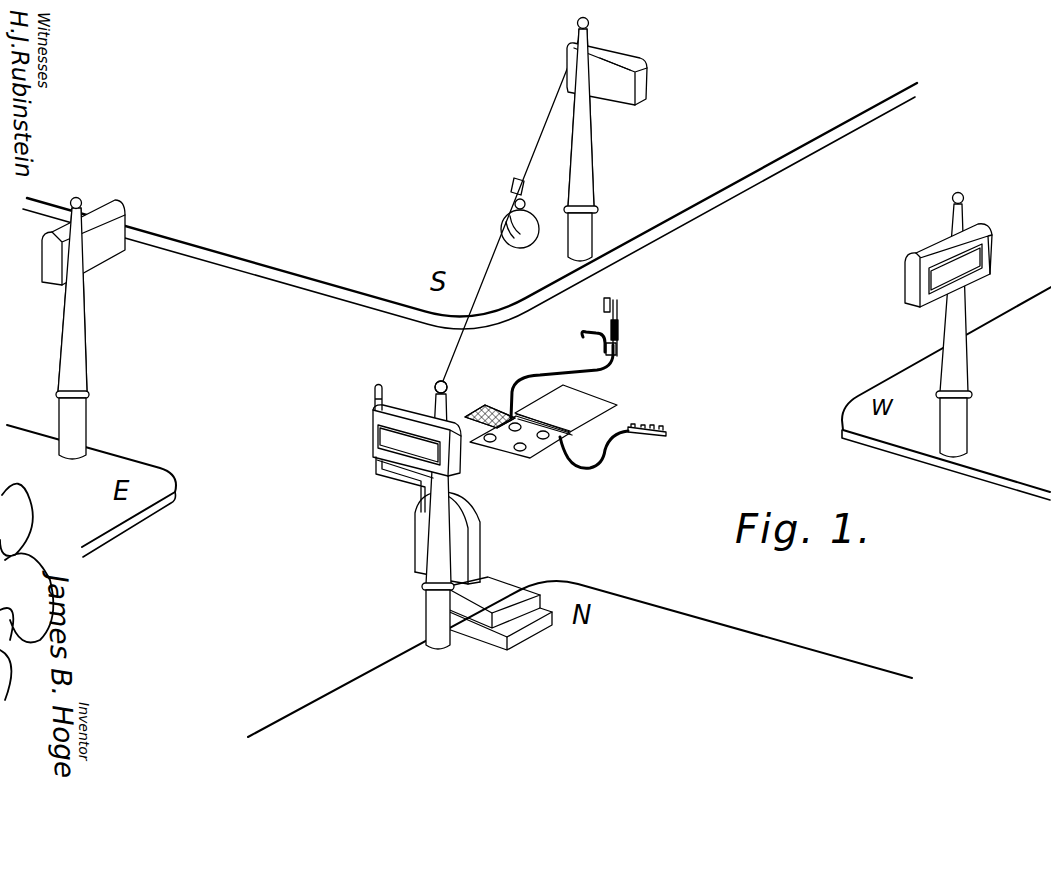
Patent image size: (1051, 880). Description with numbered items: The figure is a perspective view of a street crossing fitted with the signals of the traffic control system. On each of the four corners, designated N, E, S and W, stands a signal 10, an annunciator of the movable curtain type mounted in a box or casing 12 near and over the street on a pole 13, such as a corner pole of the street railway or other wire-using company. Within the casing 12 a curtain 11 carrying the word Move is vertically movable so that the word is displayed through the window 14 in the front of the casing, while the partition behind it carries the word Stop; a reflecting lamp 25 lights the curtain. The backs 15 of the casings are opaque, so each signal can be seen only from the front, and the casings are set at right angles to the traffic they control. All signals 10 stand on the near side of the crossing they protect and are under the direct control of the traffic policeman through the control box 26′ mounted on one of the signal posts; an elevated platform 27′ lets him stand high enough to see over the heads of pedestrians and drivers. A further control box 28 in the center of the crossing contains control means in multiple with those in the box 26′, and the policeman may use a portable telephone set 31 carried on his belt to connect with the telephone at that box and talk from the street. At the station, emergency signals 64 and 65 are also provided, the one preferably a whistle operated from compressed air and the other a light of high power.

The signal 10 is at (548, 334).
The curtain 11 is at (448, 393).
The box or casing 12 is at (115, 208).
The pole 13 is at (82, 343).
The window 14 is at (372, 440).
The back of casing 15 is at (607, 90).
The reflecting lamp 25 is at (655, 437).
The control box 26′ is at (475, 540).
The elevated platform 27′ is at (500, 585).
The street control box 28 is at (533, 443).
The portable telephone set 31 is at (618, 333).
The emergency signal (whistle) 64 is at (373, 392).
The emergency signal (light) 65 is at (507, 233).